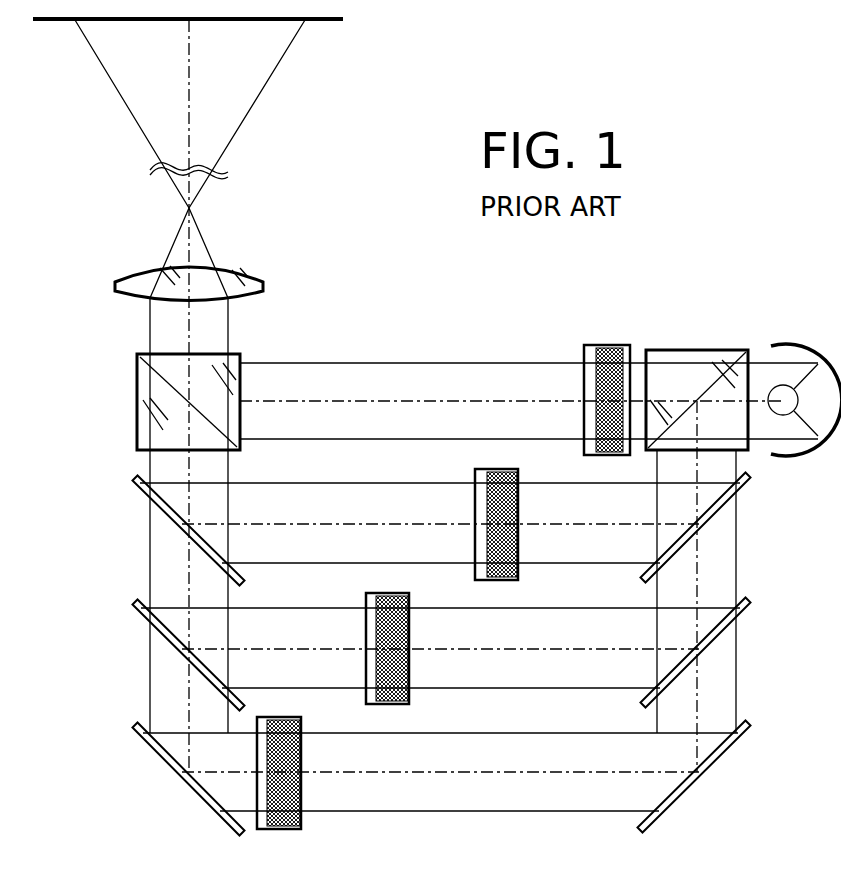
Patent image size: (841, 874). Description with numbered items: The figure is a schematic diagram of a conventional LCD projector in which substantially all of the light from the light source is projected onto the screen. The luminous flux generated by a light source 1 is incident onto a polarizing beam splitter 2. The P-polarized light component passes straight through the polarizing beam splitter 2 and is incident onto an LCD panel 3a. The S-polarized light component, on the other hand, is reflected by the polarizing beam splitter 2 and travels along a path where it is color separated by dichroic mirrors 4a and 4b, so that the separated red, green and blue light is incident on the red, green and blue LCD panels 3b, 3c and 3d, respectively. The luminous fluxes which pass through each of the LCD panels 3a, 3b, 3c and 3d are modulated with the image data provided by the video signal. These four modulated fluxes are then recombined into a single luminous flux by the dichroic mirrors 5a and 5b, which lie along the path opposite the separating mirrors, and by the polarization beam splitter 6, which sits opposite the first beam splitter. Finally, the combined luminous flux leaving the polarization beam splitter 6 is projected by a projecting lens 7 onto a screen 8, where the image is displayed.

The light source 1 is at (780, 350).
The polarizing beam splitter 2 is at (690, 350).
The LCD panel 3a is at (600, 346).
The red LCD panel 3b is at (518, 476).
The green LCD panel 3c is at (409, 600).
The blue LCD panel 3d is at (301, 724).
The dichroic mirror 4a is at (746, 482).
The dichroic mirror 4b is at (746, 606).
The dichroic mirror 5a is at (140, 608).
The dichroic mirror 5b is at (140, 484).
The polarization beam splitter 6 is at (146, 416).
The projecting lens 7 is at (136, 266).
The screen 8 is at (322, 22).